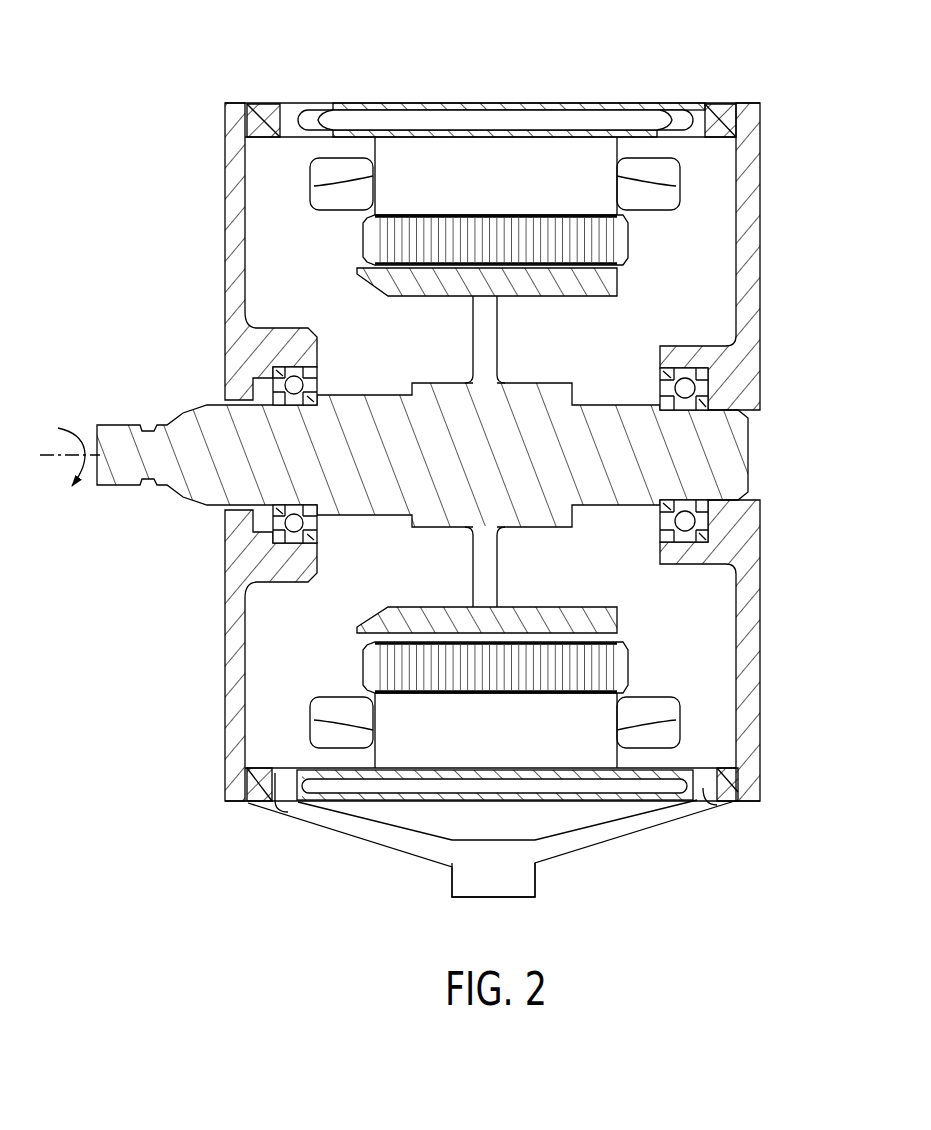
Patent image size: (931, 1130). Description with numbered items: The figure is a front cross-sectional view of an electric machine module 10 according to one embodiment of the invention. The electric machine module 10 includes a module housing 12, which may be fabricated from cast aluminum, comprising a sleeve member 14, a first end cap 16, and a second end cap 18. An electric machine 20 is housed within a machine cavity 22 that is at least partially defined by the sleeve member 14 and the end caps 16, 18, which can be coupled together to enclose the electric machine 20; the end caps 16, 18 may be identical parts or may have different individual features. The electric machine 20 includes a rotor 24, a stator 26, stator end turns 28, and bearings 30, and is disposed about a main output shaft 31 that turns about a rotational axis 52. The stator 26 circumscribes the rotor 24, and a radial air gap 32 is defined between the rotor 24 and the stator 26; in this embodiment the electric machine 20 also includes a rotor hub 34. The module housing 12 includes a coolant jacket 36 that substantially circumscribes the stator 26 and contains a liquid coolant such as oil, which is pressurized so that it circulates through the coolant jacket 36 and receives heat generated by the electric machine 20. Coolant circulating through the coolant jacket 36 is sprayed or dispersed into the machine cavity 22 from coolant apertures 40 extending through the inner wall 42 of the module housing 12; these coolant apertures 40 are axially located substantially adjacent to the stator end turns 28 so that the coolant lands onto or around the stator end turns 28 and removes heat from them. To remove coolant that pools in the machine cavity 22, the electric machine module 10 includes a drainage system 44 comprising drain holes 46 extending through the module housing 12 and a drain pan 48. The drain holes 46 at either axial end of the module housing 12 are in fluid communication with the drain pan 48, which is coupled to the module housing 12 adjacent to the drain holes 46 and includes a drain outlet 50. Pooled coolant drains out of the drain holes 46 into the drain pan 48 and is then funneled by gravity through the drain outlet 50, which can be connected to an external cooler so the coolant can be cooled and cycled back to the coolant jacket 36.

The electric machine module 10 is at (150, 110).
The module housing 12 is at (766, 113).
The sleeve member 14 is at (277, 103).
The first end cap 16 is at (234, 203).
The second end cap 18 is at (755, 341).
The electric machine 20 is at (356, 214).
The machine cavity 22 is at (616, 340).
The rotor 24 is at (628, 245).
The stator 26 is at (505, 170).
The stator end turns 28 is at (310, 187).
The bearings 30 is at (276, 396).
The main output shaft 31 is at (165, 467).
The radial air gap 32 is at (452, 210).
The rotor hub 34 is at (482, 345).
The coolant jacket 36 is at (545, 118).
The coolant apertures 40 is at (331, 107).
The inner wall 42 is at (258, 141).
The drainage system 44 is at (648, 848).
The drain holes 46 is at (282, 812).
The drain pan 48 is at (657, 814).
The drain outlet 50 is at (475, 880).
The rotational axis 52 is at (80, 428).